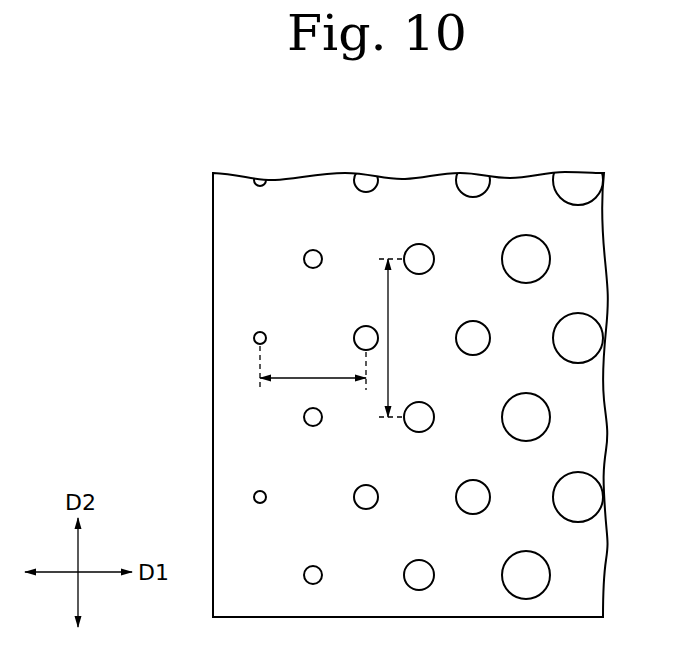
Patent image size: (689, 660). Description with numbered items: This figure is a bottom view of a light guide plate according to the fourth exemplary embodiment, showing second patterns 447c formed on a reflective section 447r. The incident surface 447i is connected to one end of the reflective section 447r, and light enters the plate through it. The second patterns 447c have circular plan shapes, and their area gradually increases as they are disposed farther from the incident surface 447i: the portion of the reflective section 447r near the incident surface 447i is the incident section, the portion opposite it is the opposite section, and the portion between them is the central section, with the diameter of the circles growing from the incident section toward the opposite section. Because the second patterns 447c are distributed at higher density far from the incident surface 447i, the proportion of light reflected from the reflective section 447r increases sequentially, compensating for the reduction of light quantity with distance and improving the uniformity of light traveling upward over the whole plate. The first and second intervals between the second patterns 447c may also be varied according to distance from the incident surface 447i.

The reflective section 447r is at (227, 268).
The second patterns 447c is at (254, 338).
The incident surface 447i is at (195, 434).